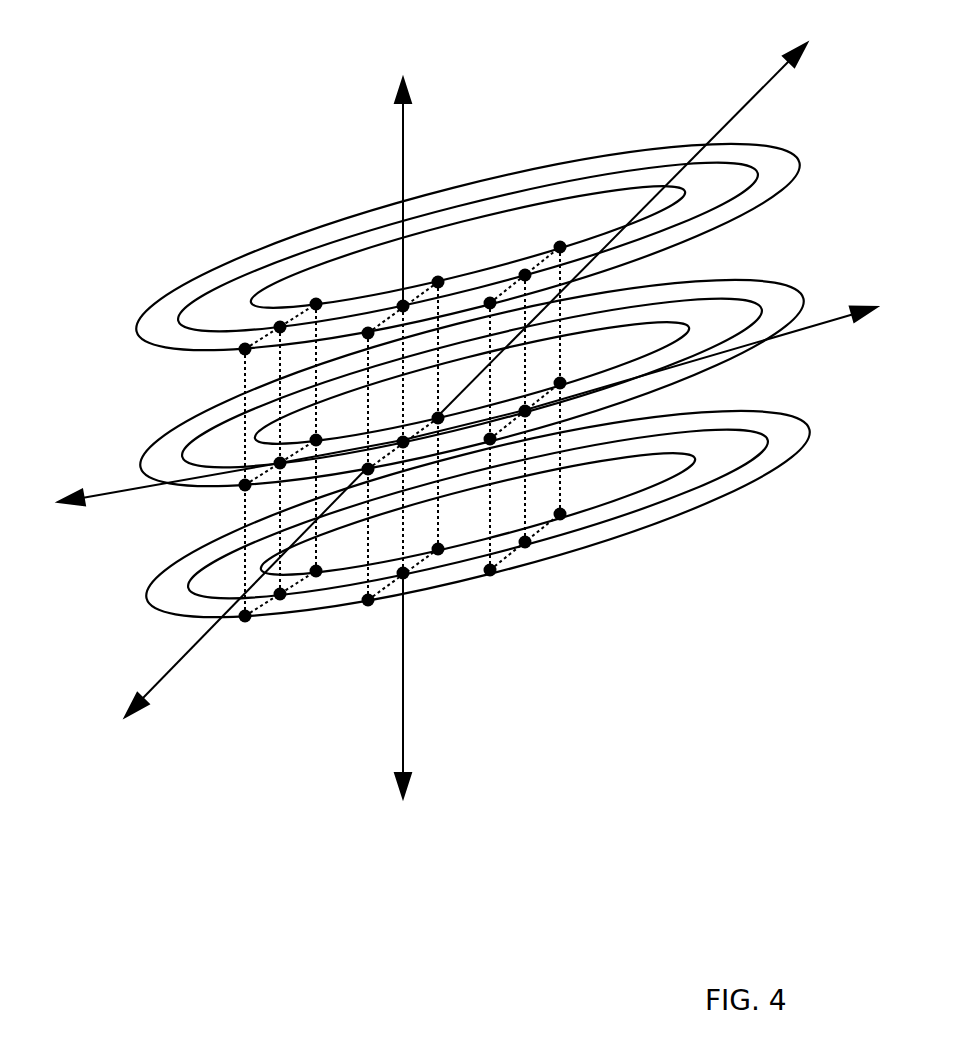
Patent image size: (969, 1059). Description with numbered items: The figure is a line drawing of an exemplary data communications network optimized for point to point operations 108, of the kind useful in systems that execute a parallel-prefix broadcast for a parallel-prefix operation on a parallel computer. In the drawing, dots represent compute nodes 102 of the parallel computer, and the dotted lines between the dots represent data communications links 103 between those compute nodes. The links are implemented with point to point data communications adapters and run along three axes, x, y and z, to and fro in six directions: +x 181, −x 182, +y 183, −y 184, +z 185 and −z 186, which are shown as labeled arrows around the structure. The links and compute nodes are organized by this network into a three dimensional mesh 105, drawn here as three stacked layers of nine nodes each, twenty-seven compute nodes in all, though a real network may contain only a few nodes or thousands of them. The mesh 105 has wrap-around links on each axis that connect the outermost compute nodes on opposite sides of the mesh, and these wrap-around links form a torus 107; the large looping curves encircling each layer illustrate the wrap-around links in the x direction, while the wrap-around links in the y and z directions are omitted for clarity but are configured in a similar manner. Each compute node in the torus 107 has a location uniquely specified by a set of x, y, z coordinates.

The compute nodes 102 is at (490, 573).
The data communications links 103 is at (245, 377).
The three dimensional mesh 105 is at (439, 464).
The torus 107 is at (220, 245).
The data communications network optimized for point to point operations 108 is at (471, 527).
The +x direction 181 is at (919, 340).
The −x direction 182 is at (151, 503).
The +y direction 183 is at (854, 71).
The −y direction 184 is at (122, 771).
The +z direction 185 is at (422, 72).
The −z direction 186 is at (424, 864).